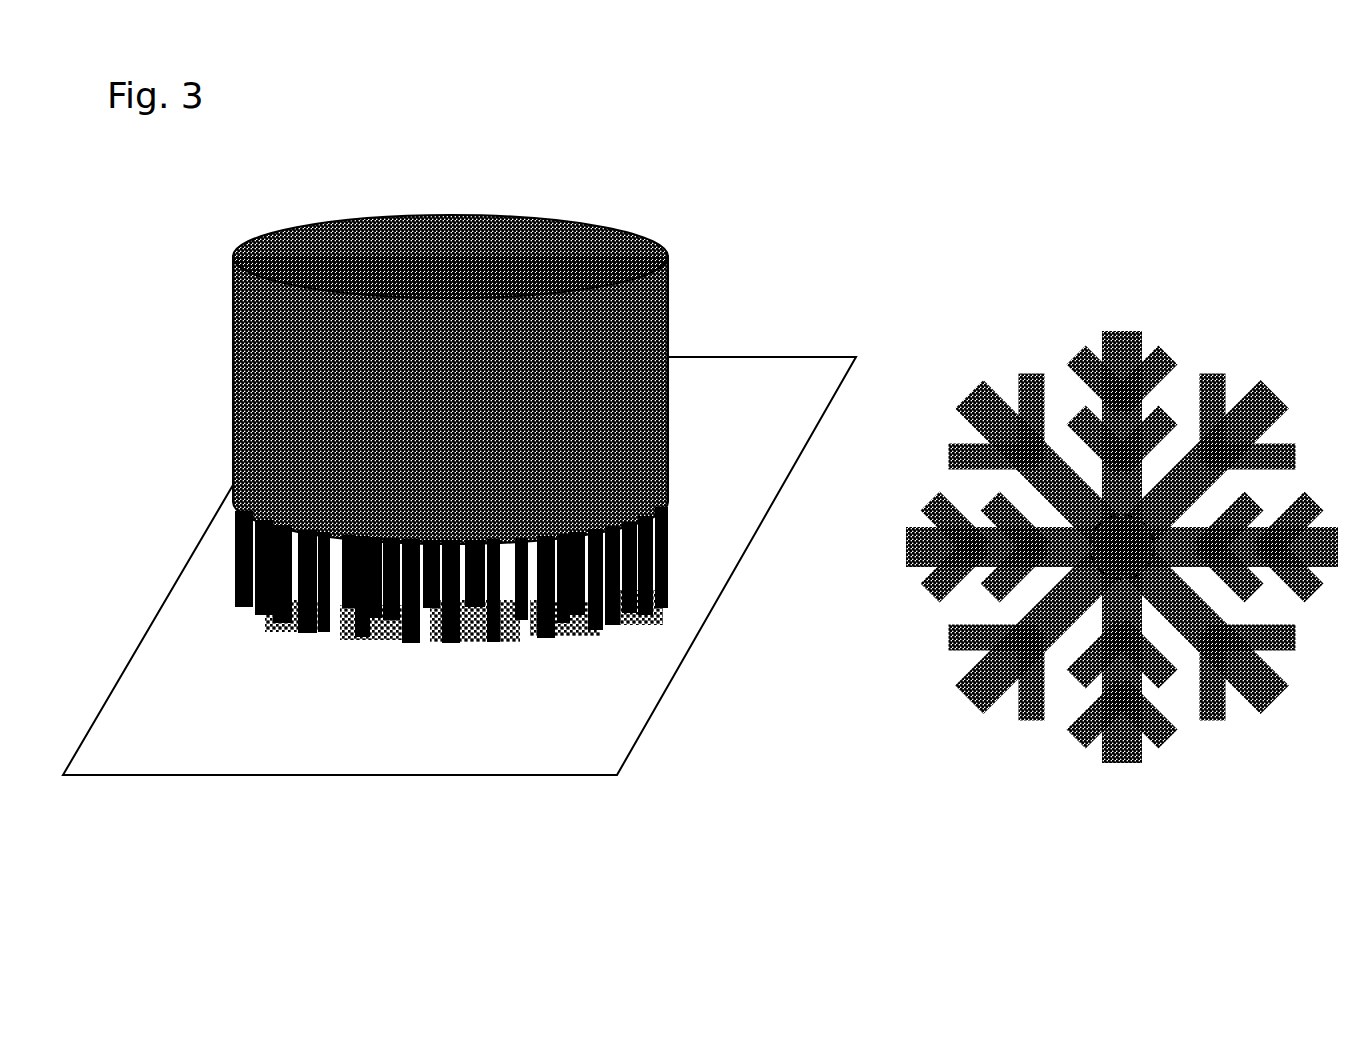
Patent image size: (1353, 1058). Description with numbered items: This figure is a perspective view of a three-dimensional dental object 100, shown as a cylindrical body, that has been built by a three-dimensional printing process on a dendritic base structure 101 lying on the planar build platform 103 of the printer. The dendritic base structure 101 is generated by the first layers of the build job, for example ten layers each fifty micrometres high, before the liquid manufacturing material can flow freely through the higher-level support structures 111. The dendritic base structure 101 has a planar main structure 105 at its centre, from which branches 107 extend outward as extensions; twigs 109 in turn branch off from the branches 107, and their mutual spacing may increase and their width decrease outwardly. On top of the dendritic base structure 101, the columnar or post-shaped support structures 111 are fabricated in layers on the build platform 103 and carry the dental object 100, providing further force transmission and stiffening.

The dental object 100 is at (530, 262).
The dendritic base structure 101 is at (786, 557).
The build platform 103 is at (227, 650).
The planar main structure 105 is at (1122, 545).
The branch 107 is at (1046, 490).
The twig 109 is at (950, 457).
The support structure 111 is at (668, 582).